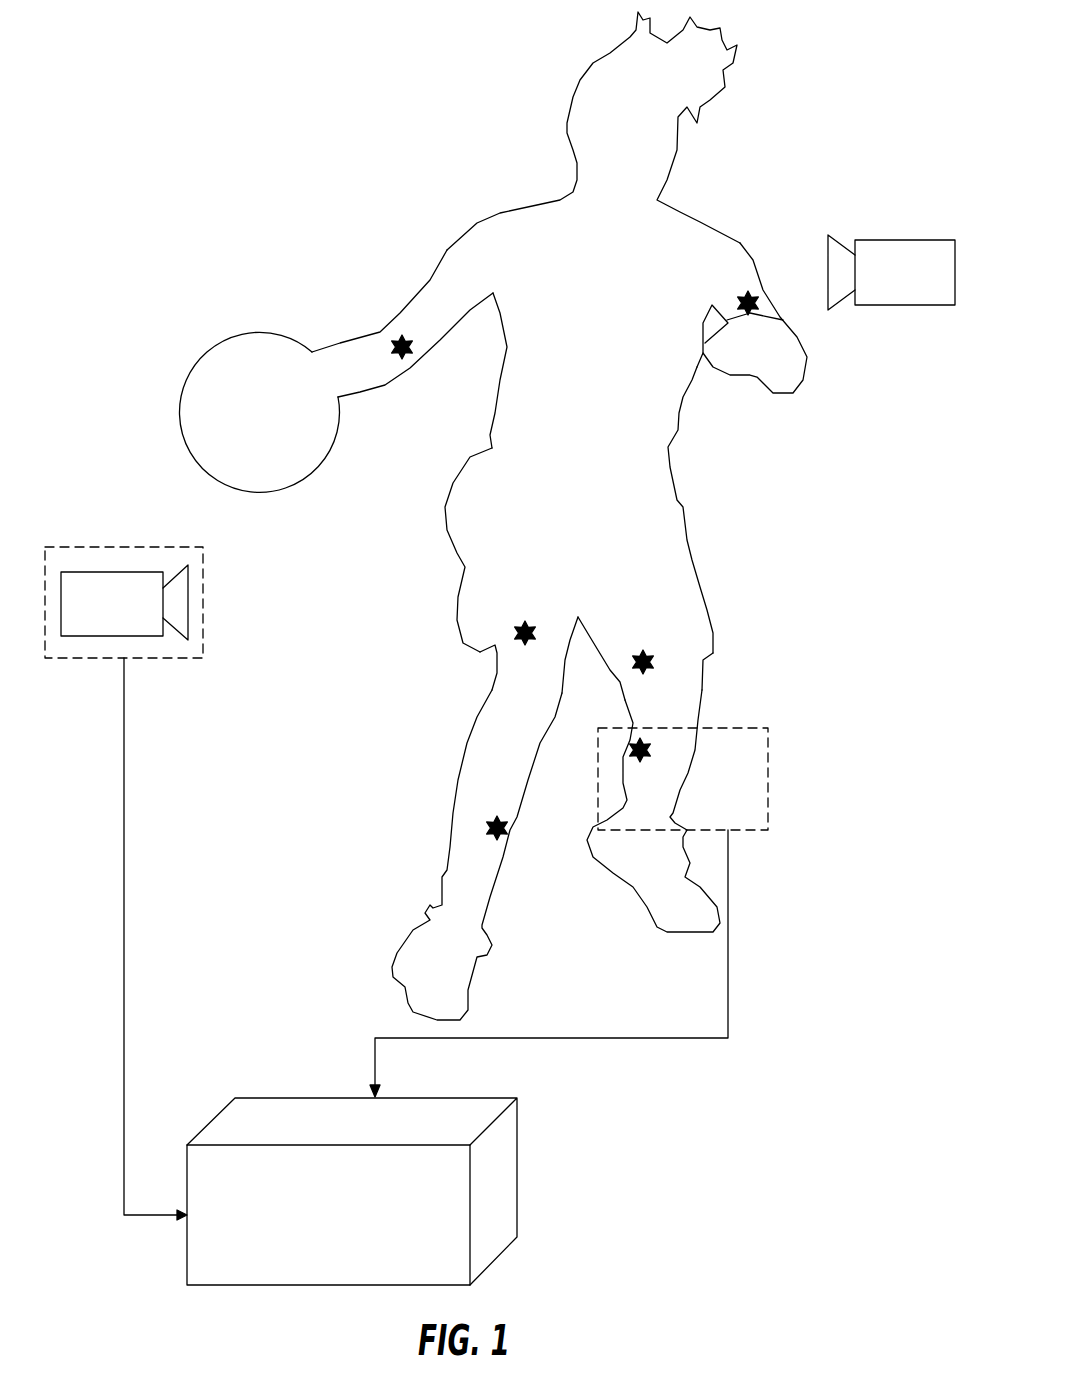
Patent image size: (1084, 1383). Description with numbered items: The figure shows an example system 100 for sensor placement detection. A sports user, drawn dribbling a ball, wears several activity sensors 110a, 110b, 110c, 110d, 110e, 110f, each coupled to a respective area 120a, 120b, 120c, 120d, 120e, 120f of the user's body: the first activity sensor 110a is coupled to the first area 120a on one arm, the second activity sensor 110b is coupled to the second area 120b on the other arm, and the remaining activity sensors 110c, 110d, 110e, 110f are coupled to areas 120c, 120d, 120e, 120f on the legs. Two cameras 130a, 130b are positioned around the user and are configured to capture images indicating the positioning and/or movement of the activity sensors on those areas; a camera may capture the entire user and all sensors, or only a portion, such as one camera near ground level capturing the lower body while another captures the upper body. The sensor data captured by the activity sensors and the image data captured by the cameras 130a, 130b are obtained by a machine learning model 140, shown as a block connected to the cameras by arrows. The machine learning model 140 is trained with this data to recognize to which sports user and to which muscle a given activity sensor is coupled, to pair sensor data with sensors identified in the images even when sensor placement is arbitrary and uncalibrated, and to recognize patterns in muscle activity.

The system 100 is at (367, 103).
The first activity sensor 110a is at (393, 333).
The second activity sensor 110b is at (780, 320).
The activity sensor 110c is at (512, 633).
The activity sensor 110d is at (657, 652).
The activity sensor 110e is at (485, 828).
The activity sensor 110f is at (652, 760).
The first area 120a is at (447, 250).
The second area 120b is at (730, 248).
The area 120c is at (495, 675).
The area 120d is at (680, 570).
The area 120e is at (465, 747).
The area 120f is at (690, 717).
The camera 130a is at (133, 617).
The camera 130b is at (927, 286).
The machine learning model 140 is at (311, 1254).